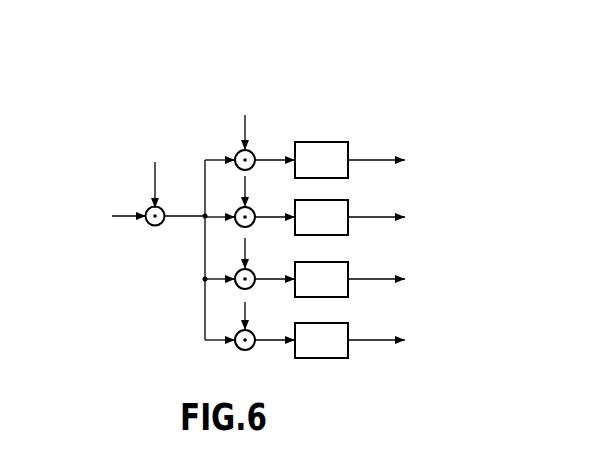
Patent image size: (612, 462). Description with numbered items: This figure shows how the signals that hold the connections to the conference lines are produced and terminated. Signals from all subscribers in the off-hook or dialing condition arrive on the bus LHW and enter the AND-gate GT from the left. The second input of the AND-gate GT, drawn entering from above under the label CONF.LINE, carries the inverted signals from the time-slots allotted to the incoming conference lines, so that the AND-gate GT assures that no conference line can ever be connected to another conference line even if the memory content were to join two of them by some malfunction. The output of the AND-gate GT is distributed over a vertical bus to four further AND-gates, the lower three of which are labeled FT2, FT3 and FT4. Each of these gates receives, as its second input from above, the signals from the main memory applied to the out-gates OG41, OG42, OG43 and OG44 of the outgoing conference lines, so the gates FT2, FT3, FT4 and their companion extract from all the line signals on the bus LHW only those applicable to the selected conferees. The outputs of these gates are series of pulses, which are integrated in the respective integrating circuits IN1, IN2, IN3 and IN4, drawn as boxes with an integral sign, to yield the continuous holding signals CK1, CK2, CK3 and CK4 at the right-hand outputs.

The conference line inverted signal input CONF.LINE is at (170, 124).
The line highway bus LHW is at (121, 229).
The AND-gate GT is at (176, 208).
The out-gate of outgoing conference line OG41 is at (247, 142).
The out-gate of outgoing conference line OG42 is at (263, 201).
The out-gate of outgoing conference line OG43 is at (264, 263).
The out-gate of outgoing conference line OG44 is at (264, 326).
The AND-gate FT2 is at (220, 209).
The AND-gate FT3 is at (220, 267).
The AND-gate FT4 is at (220, 327).
The integrating circuit IN1 is at (336, 138).
The integrating circuit IN2 is at (337, 198).
The integrating circuit IN3 is at (339, 259).
The integrating circuit IN4 is at (339, 321).
The holding signal CK1 is at (393, 162).
The holding signal CK2 is at (393, 219).
The holding signal CK3 is at (392, 280).
The holding signal CK4 is at (392, 342).